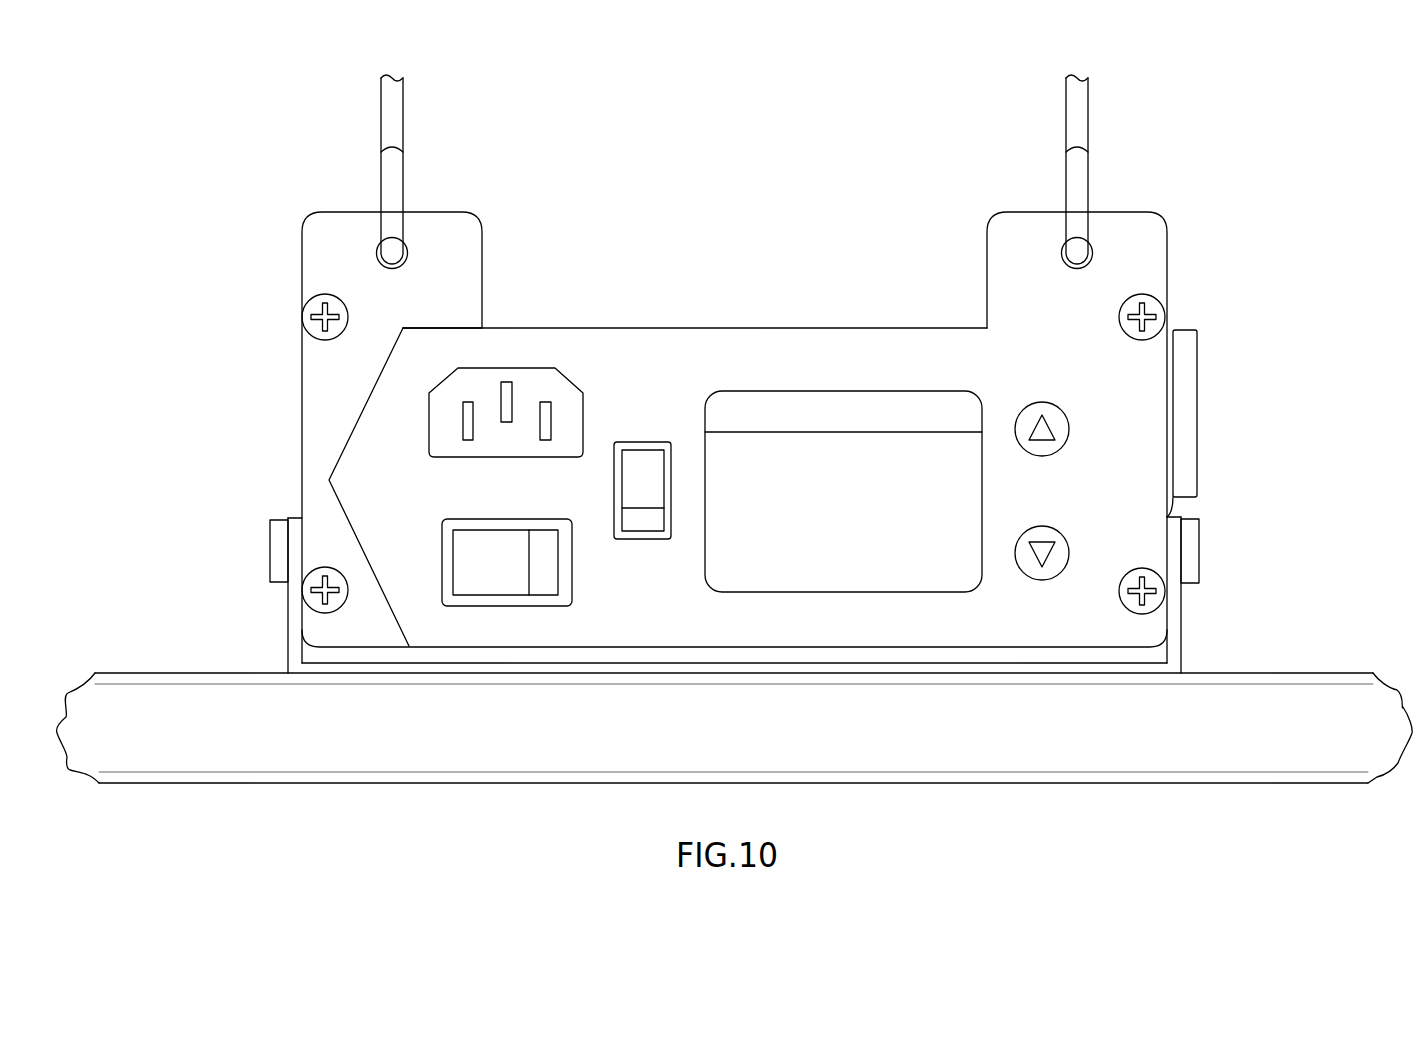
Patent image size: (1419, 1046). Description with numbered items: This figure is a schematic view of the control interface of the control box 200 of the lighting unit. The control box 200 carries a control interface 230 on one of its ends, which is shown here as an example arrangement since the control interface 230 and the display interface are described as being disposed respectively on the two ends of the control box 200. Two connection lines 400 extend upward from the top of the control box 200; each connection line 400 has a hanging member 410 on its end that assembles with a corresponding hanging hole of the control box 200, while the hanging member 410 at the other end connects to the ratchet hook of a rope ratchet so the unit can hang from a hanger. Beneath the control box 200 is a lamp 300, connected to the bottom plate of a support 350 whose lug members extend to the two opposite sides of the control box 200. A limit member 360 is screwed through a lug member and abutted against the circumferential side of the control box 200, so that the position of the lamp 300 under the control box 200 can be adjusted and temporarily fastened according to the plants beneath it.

The control box 200 is at (1212, 293).
The control interface 230 is at (1035, 345).
The lamp 300 is at (1288, 668).
The support 350 is at (1183, 632).
The limit member 360 is at (1197, 547).
The connection line 400 is at (731, 147).
The hanging member 410 is at (377, 140).